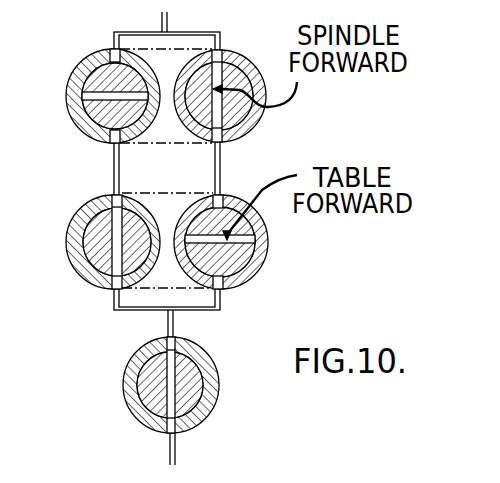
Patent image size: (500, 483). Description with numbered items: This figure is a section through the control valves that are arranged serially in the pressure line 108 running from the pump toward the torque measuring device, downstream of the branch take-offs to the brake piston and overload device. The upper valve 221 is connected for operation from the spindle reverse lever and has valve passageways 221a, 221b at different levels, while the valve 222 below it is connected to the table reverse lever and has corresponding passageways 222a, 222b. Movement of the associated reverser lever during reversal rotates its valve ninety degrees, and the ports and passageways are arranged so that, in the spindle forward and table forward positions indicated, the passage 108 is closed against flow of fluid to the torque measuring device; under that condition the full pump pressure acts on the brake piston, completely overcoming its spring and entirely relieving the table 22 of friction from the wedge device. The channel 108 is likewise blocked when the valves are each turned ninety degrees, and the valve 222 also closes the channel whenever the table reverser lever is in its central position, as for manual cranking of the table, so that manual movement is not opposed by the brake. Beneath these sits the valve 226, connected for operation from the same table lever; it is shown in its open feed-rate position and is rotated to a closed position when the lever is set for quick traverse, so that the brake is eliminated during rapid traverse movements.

The table 22 is at (0, 310).
The control valve 221 is at (167, 133).
The valve passageway 221a is at (93, 106).
The valve passageway 221b is at (262, 110).
The control valve 222 is at (158, 284).
The valve passageway 222a is at (93, 253).
The valve passageway 222b is at (265, 256).
The valve 226 is at (124, 385).
The pressure line 108 is at (177, 455).